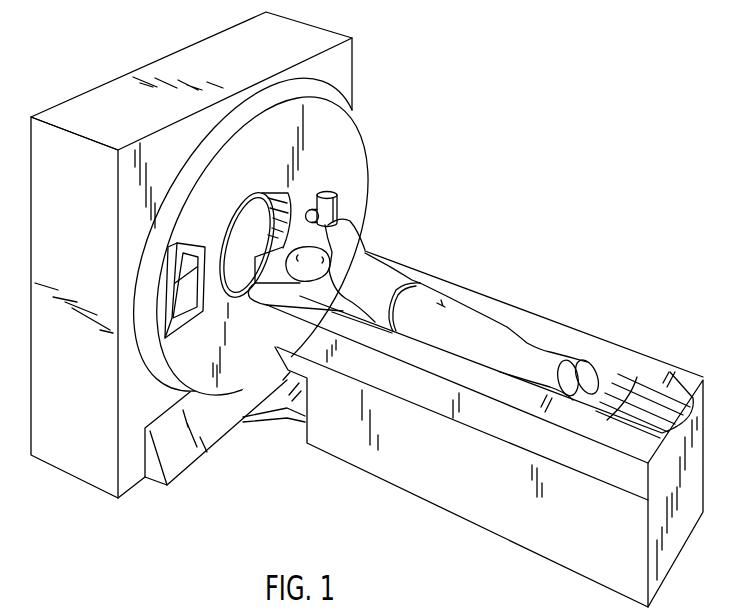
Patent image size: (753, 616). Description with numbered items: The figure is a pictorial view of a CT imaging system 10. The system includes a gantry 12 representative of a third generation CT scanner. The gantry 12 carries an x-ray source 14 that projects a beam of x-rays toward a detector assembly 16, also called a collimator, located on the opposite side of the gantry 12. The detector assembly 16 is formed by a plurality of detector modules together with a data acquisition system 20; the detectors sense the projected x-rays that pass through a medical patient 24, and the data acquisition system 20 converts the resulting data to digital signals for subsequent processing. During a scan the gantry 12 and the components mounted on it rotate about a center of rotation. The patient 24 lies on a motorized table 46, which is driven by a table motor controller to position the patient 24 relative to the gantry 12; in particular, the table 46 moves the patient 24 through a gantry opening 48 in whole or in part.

The CT imaging system 10 is at (457, 142).
The gantry 12 is at (347, 166).
The x-ray source 14 is at (338, 205).
The detector assembly 16 is at (200, 243).
The data acquisition system 20 is at (185, 317).
The medical patient 24 is at (387, 277).
The motorized table 46 is at (470, 503).
The gantry opening 48 is at (246, 232).